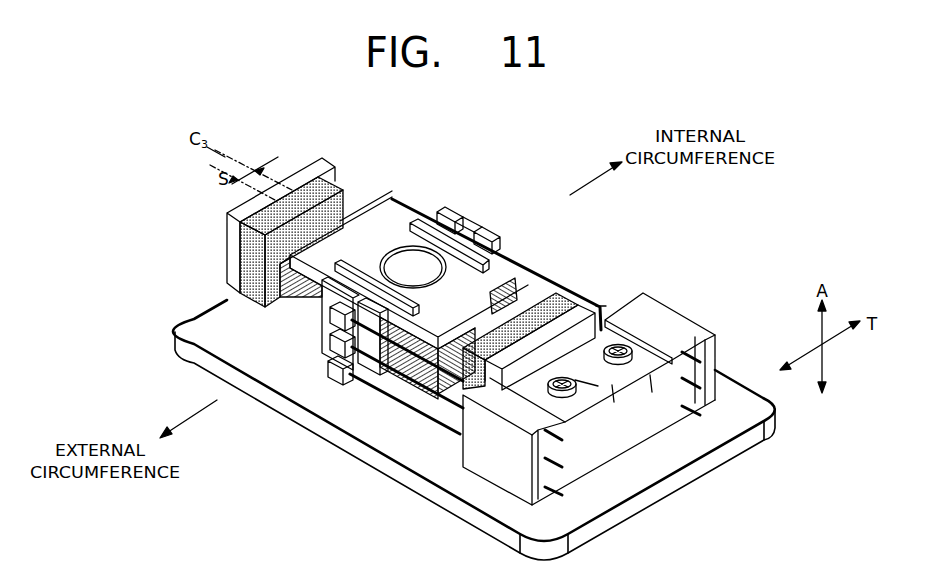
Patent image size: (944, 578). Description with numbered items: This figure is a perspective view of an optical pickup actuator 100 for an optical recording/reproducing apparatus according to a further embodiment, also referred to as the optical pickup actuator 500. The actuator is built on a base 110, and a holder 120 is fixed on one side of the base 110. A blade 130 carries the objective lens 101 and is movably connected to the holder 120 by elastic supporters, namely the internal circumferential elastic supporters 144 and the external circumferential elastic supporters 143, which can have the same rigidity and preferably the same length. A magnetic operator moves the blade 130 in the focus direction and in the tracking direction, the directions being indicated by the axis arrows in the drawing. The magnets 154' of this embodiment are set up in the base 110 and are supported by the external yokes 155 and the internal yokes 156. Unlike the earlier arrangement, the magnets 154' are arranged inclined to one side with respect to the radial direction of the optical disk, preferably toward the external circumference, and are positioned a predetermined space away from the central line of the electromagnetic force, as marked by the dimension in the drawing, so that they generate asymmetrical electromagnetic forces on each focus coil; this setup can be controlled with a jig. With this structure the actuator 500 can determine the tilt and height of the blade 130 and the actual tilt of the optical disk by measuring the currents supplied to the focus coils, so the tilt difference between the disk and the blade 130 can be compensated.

The optical pickup actuator 100 is at (375, 476).
The objective lens 101 is at (414, 257).
The base 110 is at (476, 522).
The holder 120 is at (668, 317).
The blade 130 is at (386, 215).
The external circumferential elastic supporters 143 is at (465, 437).
The internal circumferential elastic supporters 144 is at (603, 328).
The magnets 154' is at (376, 283).
The external yokes 155 is at (318, 166).
The internal yokes 156 is at (487, 245).
The optical pickup actuator 500 is at (470, 198).